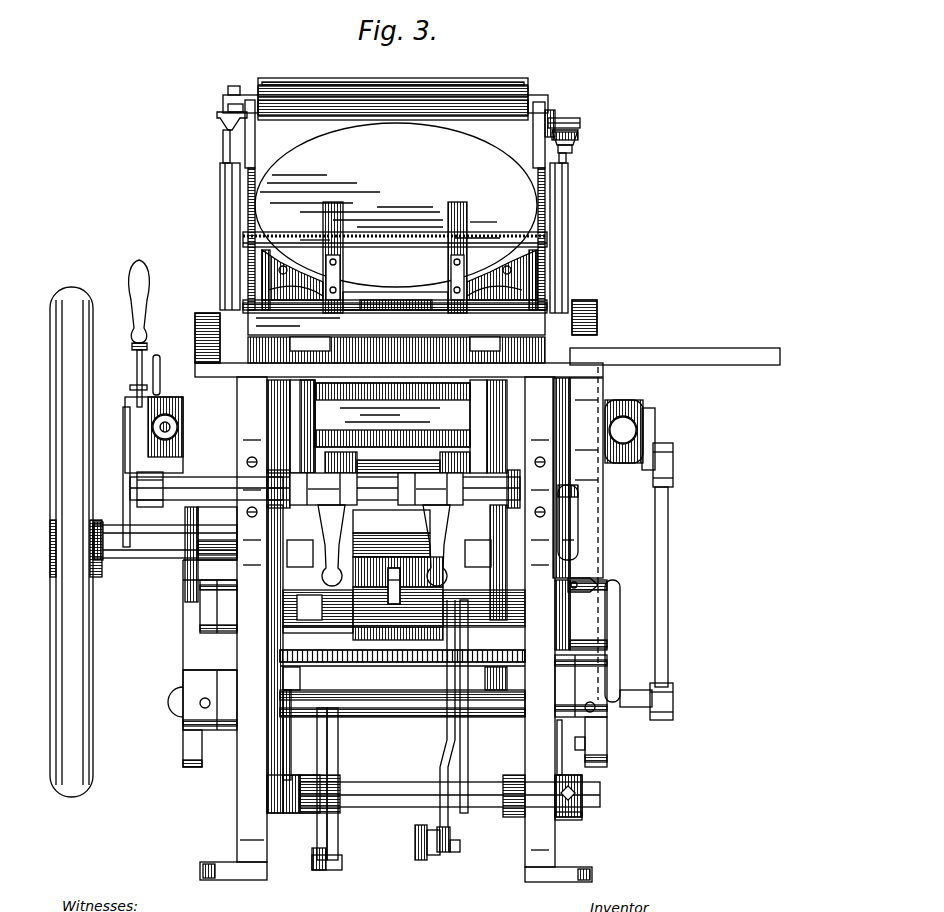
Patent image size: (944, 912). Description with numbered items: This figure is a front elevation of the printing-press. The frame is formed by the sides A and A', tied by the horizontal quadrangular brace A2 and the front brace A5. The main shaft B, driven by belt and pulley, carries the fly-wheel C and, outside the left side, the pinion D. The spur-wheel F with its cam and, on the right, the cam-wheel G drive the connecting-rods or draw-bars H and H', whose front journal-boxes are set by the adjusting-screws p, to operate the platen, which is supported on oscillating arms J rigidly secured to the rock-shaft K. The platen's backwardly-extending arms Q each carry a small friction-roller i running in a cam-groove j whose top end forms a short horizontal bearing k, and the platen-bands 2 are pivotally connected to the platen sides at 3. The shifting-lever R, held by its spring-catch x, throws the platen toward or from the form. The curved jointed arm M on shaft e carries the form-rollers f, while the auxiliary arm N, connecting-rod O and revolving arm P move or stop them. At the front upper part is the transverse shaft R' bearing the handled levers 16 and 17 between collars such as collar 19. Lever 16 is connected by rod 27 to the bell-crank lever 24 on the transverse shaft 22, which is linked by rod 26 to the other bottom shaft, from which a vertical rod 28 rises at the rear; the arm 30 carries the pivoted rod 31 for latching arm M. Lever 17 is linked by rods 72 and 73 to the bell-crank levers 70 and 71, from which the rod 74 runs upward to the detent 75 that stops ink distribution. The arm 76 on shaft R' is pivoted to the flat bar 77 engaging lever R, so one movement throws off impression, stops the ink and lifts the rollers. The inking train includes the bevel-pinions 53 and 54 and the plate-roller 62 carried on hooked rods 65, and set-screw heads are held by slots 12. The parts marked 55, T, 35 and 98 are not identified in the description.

The top roller bar 55 is at (385, 98).
The plate or disk roller 62 is at (393, 99).
The cam-wheel G is at (396, 205).
The hooked rods 65 is at (300, 178).
The bevel-pinion 54 is at (553, 112).
The bevel-pinion 53 is at (580, 135).
The form-rollers f is at (342, 229).
The spur-wheel F is at (606, 330).
The side of the frame A' is at (233, 628).
The side of the frame A is at (558, 629).
The main shaft T is at (393, 489).
The collar 19 is at (376, 489).
The handled lever 17 is at (323, 491).
The handled lever 16 is at (431, 491).
The slots 12 is at (403, 490).
The backwardly-extending arms Q is at (395, 545).
The front brace A5 is at (391, 533).
The screw 35 is at (390, 594).
The friction-roller i is at (287, 568).
The cam-groove j is at (491, 568).
The platen-bands 2 is at (487, 552).
The shaft e is at (404, 608).
The rod 74 is at (280, 638).
The horizontal quadrangular brace A2 is at (370, 663).
The rock-shaft K is at (402, 692).
The transverse shaft 22 is at (433, 810).
The bell-crank lever 70 is at (300, 790).
The rod 72 is at (340, 752).
The bell-crank lever 71 is at (340, 768).
The rod 73 is at (318, 842).
The vertical rod 28 is at (468, 756).
The rod 27 is at (447, 746).
The bell-crank lever 24 is at (426, 838).
The rod 26 is at (448, 834).
The fly-wheel C is at (80, 713).
The main shaft B is at (150, 546).
The flat bar 77 is at (128, 552).
The transverse shaft R' is at (206, 488).
The arm 76 is at (145, 507).
The connecting-rod H' is at (167, 435).
The adjusting-screws p is at (172, 432).
The shifting-lever R is at (134, 326).
The spring-catch x is at (160, 356).
The pivotal connection 3 is at (174, 363).
The pin 98 is at (130, 388).
The oscillating arms J is at (178, 656).
The horizontal bearing k is at (607, 430).
The connecting-rod H is at (624, 420).
The revolving arm P is at (656, 432).
The connecting-rod O is at (672, 516).
The pinion D is at (603, 548).
The detent 75 is at (600, 588).
The rod 31 is at (562, 658).
The curved jointed arm M is at (606, 752).
The auxiliary arm N is at (618, 670).
The arm 30 is at (568, 813).